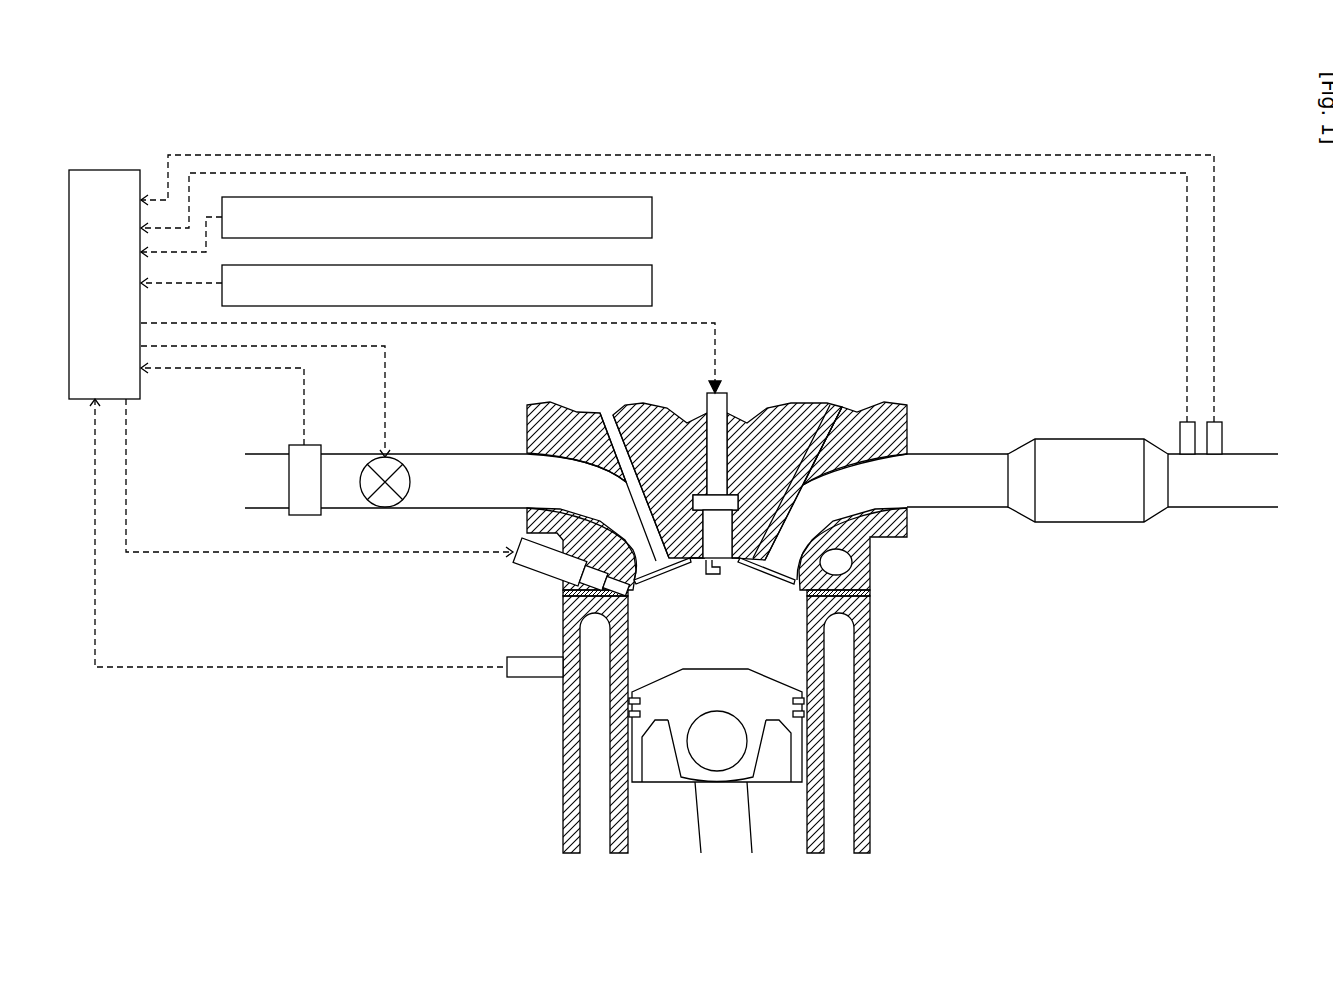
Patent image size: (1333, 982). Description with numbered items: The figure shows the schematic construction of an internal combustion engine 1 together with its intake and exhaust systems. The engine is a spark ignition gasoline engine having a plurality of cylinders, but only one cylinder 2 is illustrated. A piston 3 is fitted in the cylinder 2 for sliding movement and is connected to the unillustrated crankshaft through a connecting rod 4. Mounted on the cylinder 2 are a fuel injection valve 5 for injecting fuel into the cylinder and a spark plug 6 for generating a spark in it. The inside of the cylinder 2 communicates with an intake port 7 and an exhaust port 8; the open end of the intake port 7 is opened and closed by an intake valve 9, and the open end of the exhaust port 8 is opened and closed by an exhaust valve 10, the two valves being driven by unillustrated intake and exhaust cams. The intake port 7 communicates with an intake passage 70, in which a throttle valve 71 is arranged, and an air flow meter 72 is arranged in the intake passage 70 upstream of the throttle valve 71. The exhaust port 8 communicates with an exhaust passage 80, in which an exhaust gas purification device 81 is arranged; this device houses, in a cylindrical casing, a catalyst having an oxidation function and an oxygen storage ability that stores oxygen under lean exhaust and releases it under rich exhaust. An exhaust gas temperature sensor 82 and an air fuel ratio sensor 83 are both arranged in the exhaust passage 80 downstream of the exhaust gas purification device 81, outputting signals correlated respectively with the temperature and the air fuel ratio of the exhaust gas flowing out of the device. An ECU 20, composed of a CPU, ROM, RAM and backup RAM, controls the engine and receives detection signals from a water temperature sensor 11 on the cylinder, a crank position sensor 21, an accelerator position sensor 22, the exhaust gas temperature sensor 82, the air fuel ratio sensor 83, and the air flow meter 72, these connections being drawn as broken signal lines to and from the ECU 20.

The internal combustion engine 1 is at (968, 668).
The cylinder 2 is at (807, 632).
The piston 3 is at (780, 760).
The connecting rod 4 is at (703, 823).
The fuel injection valve 5 is at (537, 573).
The spark plug 6 is at (727, 393).
The intake port 7 is at (565, 508).
The exhaust port 8 is at (880, 487).
The intake valve 9 is at (653, 590).
The exhaust valve 10 is at (762, 582).
The water temperature sensor 11 is at (527, 677).
The ECU 20 is at (115, 170).
The crank position sensor 21 is at (652, 217).
The accelerator position sensor 22 is at (652, 284).
The intake passage 70 is at (465, 455).
The throttle valve 71 is at (378, 457).
The air flow meter 72 is at (292, 445).
The exhaust passage 80 is at (960, 510).
The exhaust gas purification device 81 is at (1093, 522).
The exhaust gas temperature sensor 82 is at (1181, 422).
The air fuel ratio sensor 83 is at (1218, 422).